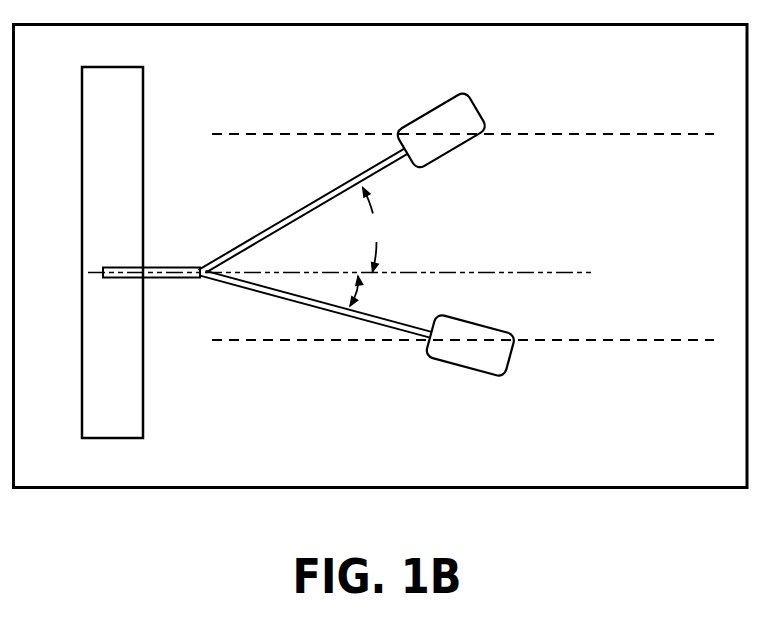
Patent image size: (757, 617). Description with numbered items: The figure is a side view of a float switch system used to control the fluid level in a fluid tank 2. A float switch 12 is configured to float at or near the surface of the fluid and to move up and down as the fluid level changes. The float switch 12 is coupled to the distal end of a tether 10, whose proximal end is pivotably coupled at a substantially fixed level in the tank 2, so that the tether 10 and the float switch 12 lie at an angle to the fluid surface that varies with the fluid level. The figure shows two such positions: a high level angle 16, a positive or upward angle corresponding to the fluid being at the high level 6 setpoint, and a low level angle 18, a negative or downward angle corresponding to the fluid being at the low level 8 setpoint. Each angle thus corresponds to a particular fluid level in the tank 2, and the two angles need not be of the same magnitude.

The fluid tank 2 is at (258, 444).
The high level 6 is at (569, 134).
The low level 8 is at (602, 340).
The tether 10 is at (255, 235).
The float switch 12 is at (432, 108).
The high level angle 16 is at (377, 230).
The low level angle 18 is at (368, 292).